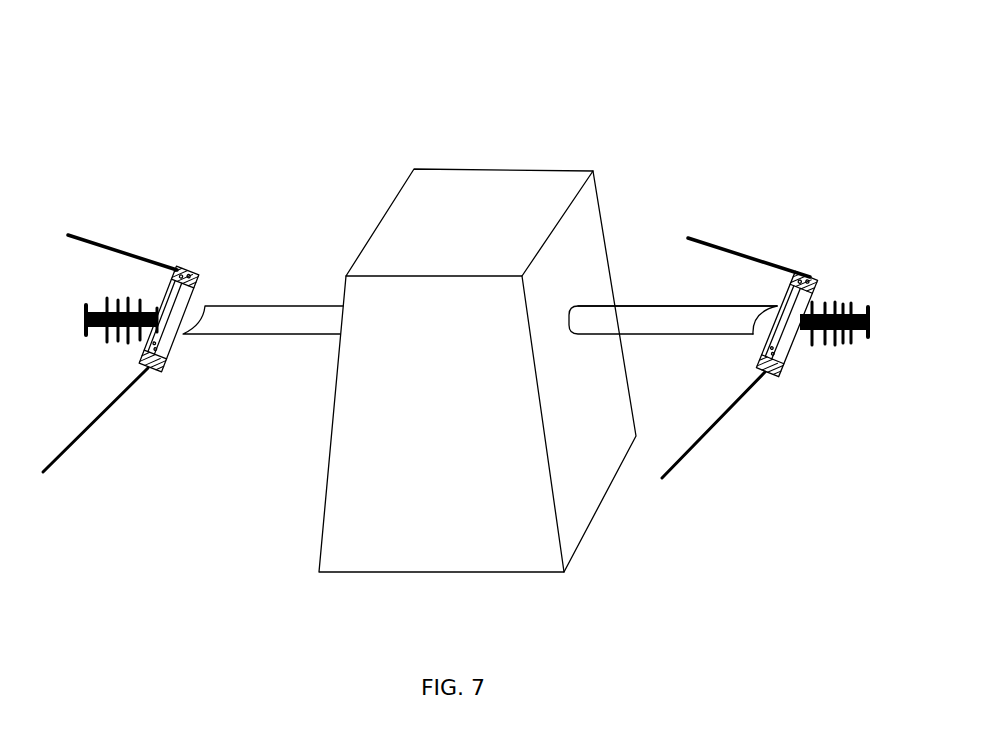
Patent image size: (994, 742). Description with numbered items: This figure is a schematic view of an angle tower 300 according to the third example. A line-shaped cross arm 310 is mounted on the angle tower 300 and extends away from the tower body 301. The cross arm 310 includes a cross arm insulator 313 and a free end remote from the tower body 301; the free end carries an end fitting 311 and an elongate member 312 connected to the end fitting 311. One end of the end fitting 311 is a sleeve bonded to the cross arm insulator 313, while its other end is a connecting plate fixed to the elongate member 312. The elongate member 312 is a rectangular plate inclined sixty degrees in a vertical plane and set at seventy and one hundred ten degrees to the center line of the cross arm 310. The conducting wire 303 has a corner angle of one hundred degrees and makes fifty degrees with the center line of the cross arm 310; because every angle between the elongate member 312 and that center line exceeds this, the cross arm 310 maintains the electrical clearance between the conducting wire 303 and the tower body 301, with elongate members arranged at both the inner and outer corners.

The angle tower 300 is at (467, 102).
The tower body 301 is at (430, 228).
The conducting wire 303 is at (702, 442).
The cross arm 310 is at (650, 334).
The end fitting 311 is at (778, 317).
The elongate member 312 is at (813, 280).
The cross arm insulator 313 is at (698, 321).